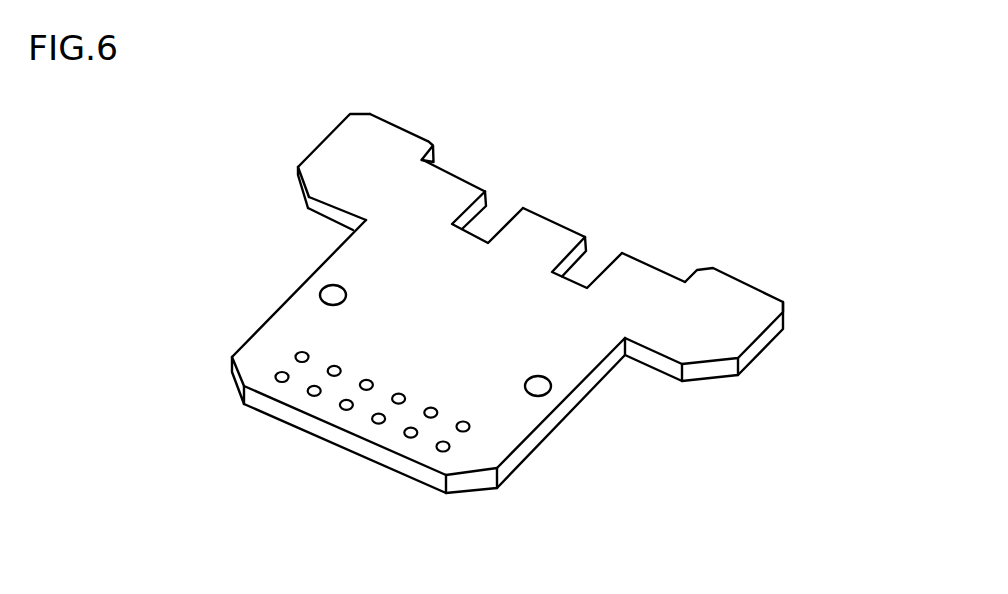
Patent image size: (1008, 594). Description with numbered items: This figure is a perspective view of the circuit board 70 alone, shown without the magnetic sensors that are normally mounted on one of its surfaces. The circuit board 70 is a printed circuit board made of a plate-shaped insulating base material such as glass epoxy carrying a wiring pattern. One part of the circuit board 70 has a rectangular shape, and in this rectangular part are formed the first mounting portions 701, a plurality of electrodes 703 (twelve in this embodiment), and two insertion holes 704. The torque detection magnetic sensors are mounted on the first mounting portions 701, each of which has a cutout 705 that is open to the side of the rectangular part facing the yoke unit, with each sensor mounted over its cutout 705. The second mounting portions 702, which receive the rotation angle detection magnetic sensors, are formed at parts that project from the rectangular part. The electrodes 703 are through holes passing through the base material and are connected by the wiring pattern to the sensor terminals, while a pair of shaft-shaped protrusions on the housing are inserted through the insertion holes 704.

The circuit board 70 is at (537, 447).
The first mounting portions 701 is at (490, 195).
The second mounting portions 702 is at (372, 139).
The electrodes 703 is at (277, 376).
The insertion holes 704 is at (322, 288).
The cutouts 705 is at (487, 222).